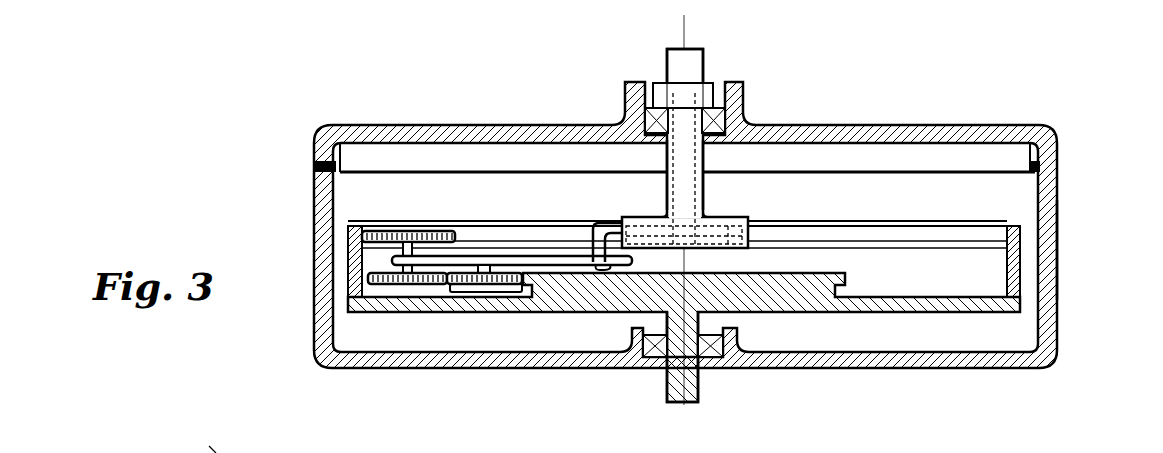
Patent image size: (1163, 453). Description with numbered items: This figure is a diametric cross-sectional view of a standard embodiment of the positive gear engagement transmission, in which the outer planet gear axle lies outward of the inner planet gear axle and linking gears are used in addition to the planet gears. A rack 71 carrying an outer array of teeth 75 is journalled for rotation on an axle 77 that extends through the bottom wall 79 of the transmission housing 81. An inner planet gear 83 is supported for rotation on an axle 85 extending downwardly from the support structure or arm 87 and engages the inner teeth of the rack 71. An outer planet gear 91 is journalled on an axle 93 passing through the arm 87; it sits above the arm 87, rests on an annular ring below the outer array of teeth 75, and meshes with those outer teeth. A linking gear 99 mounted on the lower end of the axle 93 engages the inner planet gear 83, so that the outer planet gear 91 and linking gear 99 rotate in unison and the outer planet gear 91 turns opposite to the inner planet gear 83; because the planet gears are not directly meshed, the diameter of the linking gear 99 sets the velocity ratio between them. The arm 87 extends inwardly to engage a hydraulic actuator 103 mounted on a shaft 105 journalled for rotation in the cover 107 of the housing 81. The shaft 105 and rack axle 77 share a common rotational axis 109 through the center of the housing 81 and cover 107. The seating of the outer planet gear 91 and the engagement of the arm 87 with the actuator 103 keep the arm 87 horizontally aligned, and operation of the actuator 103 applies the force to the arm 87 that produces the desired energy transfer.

The rack 71 is at (780, 300).
The outer array of teeth 75 is at (203, 438).
The axle 77 is at (688, 390).
The bottom wall 79 is at (548, 366).
The transmission housing 81 is at (1057, 229).
The inner planet gear 83 is at (482, 283).
The axle 85 is at (503, 264).
The support structure or arm 87 is at (540, 258).
The outer planet gear 91 is at (398, 235).
The axle 93 is at (405, 270).
The linking gear 99 is at (372, 280).
The hydraulic actuator 103 is at (748, 234).
The shaft 105 is at (695, 182).
The cover 107 is at (865, 128).
The common rotational axis 109 is at (684, 31).